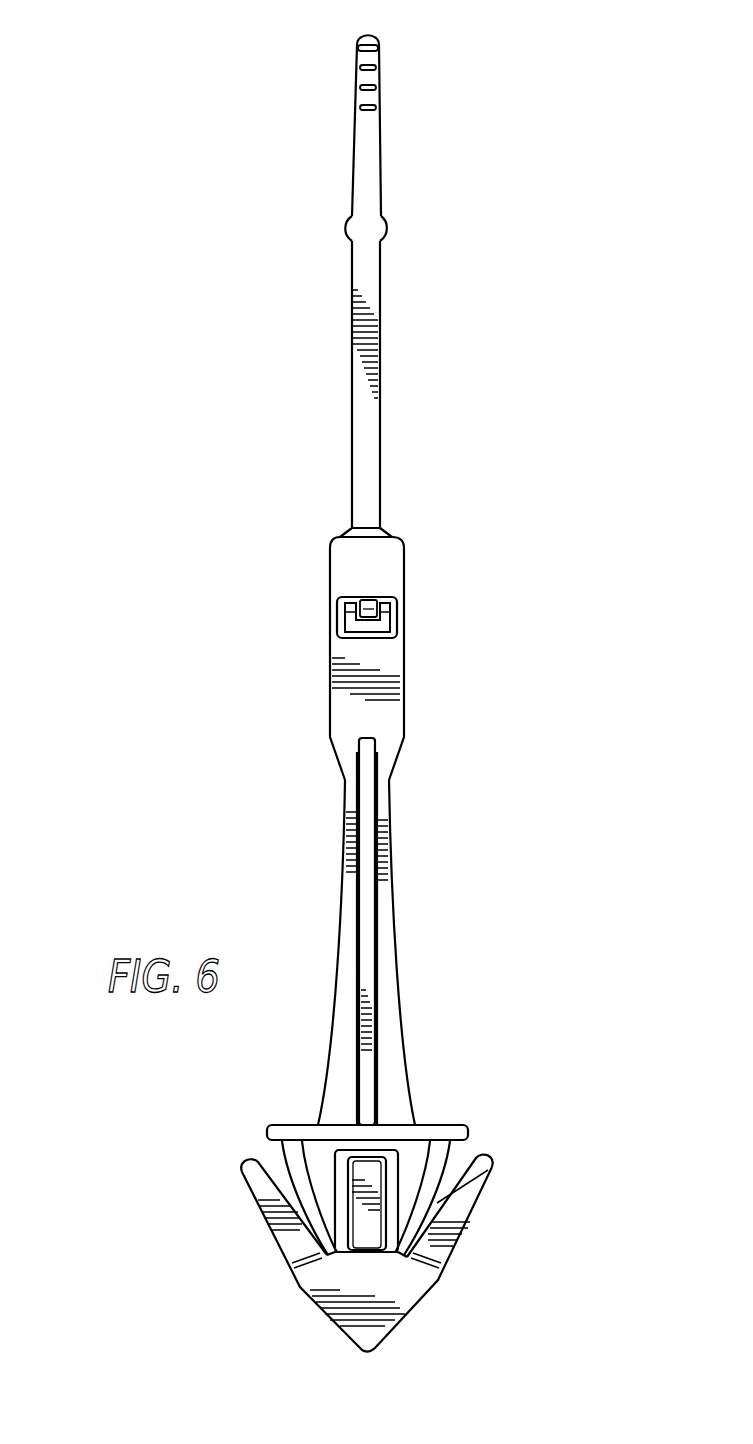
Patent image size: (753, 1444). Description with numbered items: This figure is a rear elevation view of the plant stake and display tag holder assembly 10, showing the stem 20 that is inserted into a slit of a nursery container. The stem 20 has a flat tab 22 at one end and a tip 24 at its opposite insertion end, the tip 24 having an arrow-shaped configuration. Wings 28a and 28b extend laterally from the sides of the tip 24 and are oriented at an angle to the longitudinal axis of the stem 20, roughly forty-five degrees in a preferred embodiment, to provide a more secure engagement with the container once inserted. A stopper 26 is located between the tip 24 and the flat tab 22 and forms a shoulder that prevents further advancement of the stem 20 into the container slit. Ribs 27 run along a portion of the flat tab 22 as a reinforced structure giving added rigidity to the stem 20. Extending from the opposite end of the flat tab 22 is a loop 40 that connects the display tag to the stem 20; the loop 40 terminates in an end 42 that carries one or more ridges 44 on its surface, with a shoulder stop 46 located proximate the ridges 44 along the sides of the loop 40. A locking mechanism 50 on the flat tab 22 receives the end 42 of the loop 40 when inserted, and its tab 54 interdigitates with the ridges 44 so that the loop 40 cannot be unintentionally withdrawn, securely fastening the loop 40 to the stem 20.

The plant stake and display tag holder assembly 10 is at (175, 489).
The stem 20 is at (333, 848).
The flat tab 22 is at (375, 702).
The tip 24 is at (367, 1351).
The stopper 26 is at (452, 1125).
The ribs 27 is at (369, 965).
The wing 28a is at (263, 1211).
The wing 28b is at (458, 1216).
The loop 40 is at (383, 413).
The end 42 is at (371, 34).
The ridges 44 is at (404, 83).
The shoulder stop 46 is at (385, 226).
The locking mechanism 50 is at (398, 617).
The tab 54 is at (368, 602).